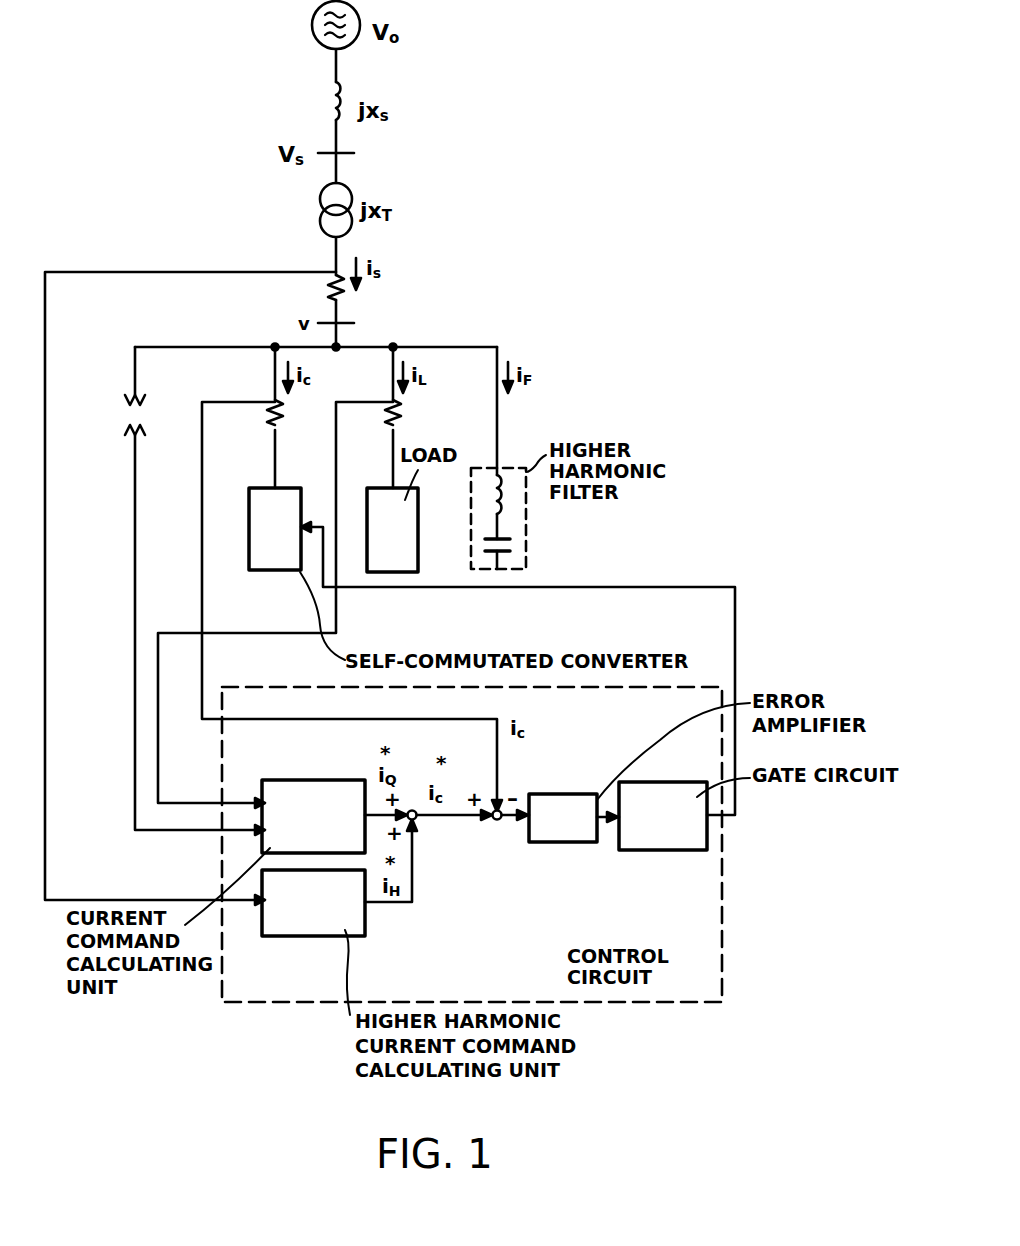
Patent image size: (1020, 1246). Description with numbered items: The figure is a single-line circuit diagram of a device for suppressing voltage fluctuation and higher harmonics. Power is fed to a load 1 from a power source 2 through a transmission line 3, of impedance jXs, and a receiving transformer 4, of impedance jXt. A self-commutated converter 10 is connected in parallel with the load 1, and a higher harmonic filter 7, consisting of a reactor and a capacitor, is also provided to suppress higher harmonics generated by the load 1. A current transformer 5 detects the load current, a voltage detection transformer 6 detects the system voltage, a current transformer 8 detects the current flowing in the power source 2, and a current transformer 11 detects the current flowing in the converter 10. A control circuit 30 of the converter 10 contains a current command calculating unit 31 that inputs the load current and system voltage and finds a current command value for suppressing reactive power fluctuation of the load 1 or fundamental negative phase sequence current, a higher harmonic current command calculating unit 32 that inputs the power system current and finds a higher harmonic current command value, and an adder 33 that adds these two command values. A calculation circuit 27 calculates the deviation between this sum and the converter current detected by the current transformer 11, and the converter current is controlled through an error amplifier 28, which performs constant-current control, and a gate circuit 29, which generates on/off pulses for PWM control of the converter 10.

The load 1 is at (418, 530).
The power source 2 is at (311, 30).
The transmission line 3 is at (325, 105).
The receiving transformer 4 is at (320, 228).
The current transformer 5 is at (406, 419).
The voltage detection transformer 6 is at (125, 417).
The higher harmonic filter 7 is at (526, 541).
The current transformer 8 is at (350, 300).
The self-commutated converter 10 is at (264, 572).
The current transformer 11 is at (286, 412).
The calculation circuit 27 is at (500, 821).
The error amplifier 28 is at (560, 794).
The gate circuit 29 is at (663, 782).
The control circuit 30 is at (607, 1003).
The current command calculating unit 31 is at (314, 780).
The higher harmonic current command calculating unit 32 is at (318, 937).
The adder 33 is at (418, 821).